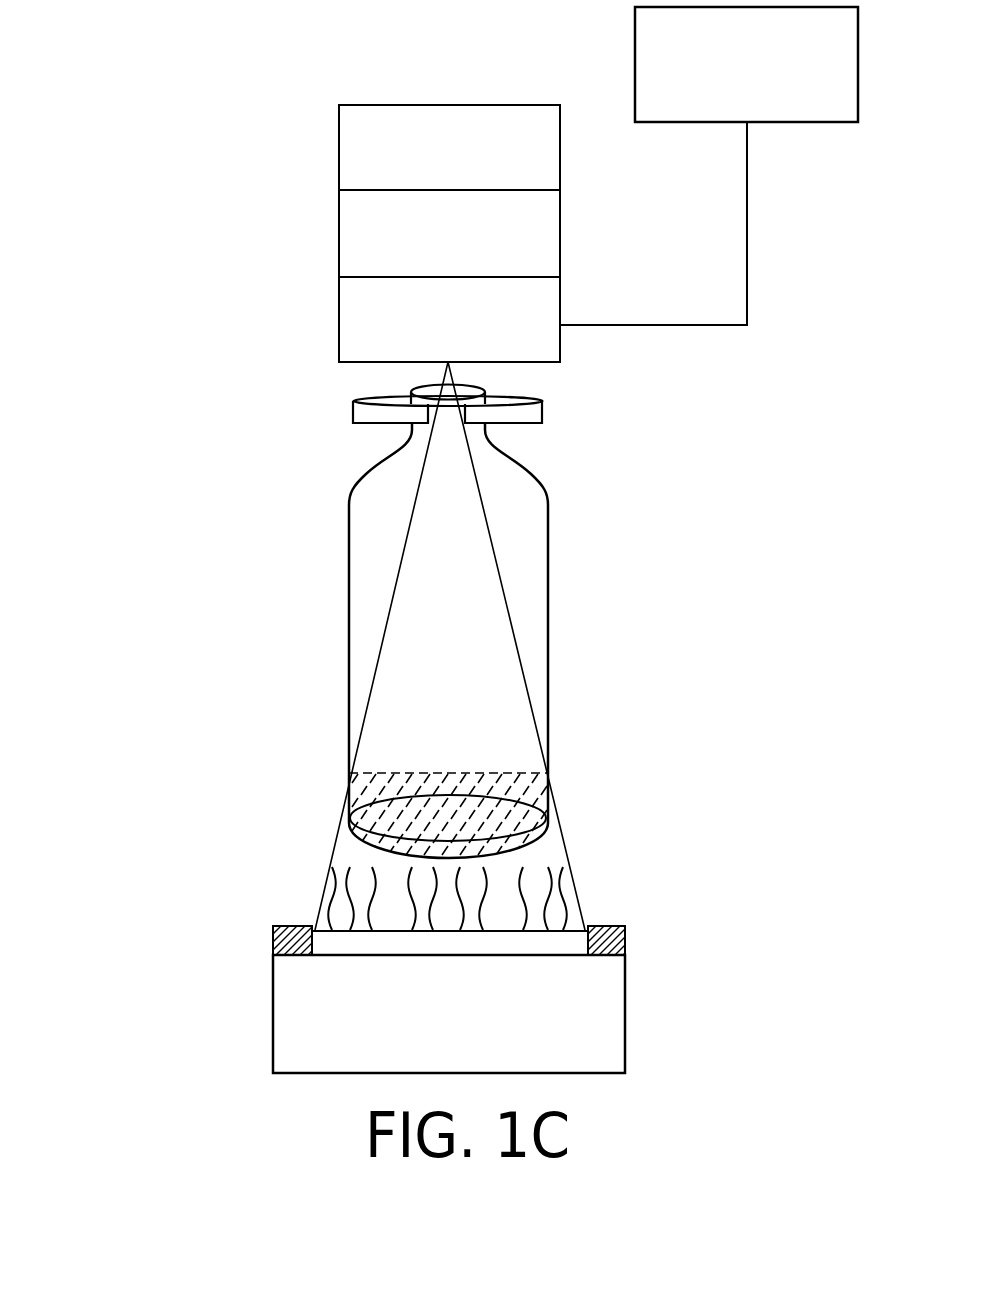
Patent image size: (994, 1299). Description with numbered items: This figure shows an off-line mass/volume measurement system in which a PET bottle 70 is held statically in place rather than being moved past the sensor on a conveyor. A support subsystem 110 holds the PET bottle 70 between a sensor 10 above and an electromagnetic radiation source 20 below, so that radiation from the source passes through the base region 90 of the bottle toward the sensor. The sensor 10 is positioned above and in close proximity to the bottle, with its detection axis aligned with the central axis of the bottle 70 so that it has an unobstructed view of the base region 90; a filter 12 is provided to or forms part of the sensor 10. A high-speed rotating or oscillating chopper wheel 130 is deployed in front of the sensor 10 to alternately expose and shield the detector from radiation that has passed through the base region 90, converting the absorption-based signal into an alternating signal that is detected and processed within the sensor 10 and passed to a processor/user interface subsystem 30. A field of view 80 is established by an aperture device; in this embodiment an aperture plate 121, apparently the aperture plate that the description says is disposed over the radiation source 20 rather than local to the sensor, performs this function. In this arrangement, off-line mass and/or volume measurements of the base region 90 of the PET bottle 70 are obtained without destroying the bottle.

The sensor 10 is at (449, 147).
The filter 12 is at (449, 233).
The chopper wheel 130 is at (449, 319).
The processor/user interface subsystem 30 is at (709, 166).
The support subsystem 110 is at (335, 400).
The PET bottle 70 is at (549, 597).
The field of view 80 is at (525, 688).
The base region 90 is at (552, 778).
The aperture 121 is at (263, 918).
The electromagnetic radiation source 20 is at (449, 1014).